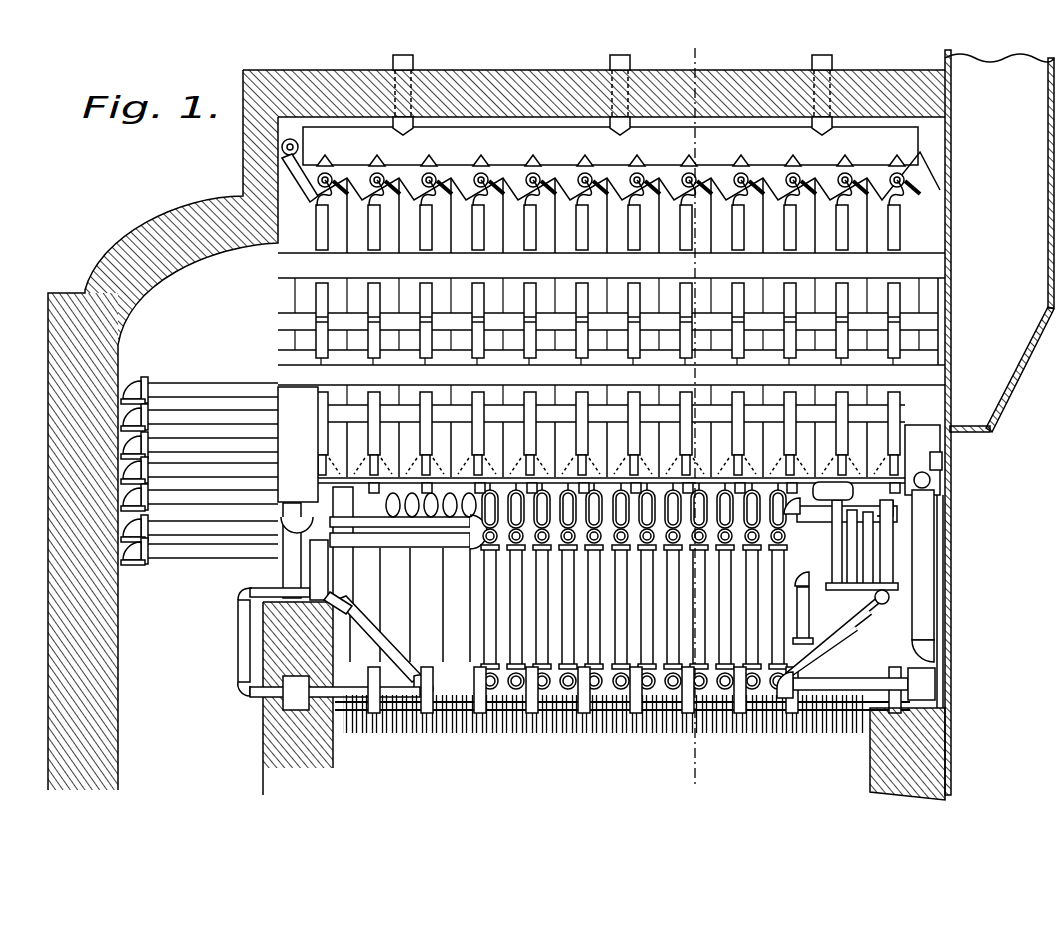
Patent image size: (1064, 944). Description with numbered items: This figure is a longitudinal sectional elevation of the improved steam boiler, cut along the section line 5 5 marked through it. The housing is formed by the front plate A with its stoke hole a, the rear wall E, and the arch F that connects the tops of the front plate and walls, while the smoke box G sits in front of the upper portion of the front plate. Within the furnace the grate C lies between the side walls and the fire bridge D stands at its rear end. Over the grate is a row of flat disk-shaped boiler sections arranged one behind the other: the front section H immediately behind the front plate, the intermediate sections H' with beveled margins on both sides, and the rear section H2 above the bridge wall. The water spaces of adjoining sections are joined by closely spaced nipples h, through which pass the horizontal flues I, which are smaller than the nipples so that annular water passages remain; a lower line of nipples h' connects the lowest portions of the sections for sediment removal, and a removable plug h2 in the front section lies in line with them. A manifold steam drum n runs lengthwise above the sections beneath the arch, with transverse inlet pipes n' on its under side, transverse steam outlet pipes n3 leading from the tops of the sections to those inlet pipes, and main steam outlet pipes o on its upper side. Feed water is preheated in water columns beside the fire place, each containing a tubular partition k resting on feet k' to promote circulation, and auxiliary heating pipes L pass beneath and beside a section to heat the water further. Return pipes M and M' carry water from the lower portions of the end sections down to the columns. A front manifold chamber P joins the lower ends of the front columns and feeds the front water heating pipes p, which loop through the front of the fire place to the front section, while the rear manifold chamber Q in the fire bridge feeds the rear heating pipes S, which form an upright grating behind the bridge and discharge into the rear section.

The main steam outlet pipes o is at (413, 60).
The arch F is at (594, 77).
The section line 5 5 is at (691, 417).
The transverse inlet pipes n' is at (619, 162).
The manifold steam drum n is at (610, 146).
The rear boiler section H2 is at (300, 193).
The nipples h is at (609, 327).
The transverse steam outlet pipes n3 is at (636, 198).
The intermediate boiler sections H' is at (607, 327).
The front boiler section H is at (625, 194).
The smoke box G is at (999, 243).
The horizontal flues I is at (566, 273).
The lower nipples h' is at (609, 444).
The removable plug h2 is at (951, 462).
The rear heating pipes S is at (199, 471).
The return pipe M' is at (266, 551).
The tubular partitions k is at (398, 590).
The auxiliary heating pipes L is at (520, 613).
The grate C is at (506, 737).
The front water heating pipes p is at (842, 590).
The feet k' is at (787, 608).
The front plate A is at (951, 512).
The stoke hole a is at (951, 547).
The return pipes M is at (949, 576).
The front manifold chamber P is at (921, 684).
The rear manifold chamber Q is at (329, 655).
The rear wall E is at (105, 670).
The fire bridge D is at (265, 755).